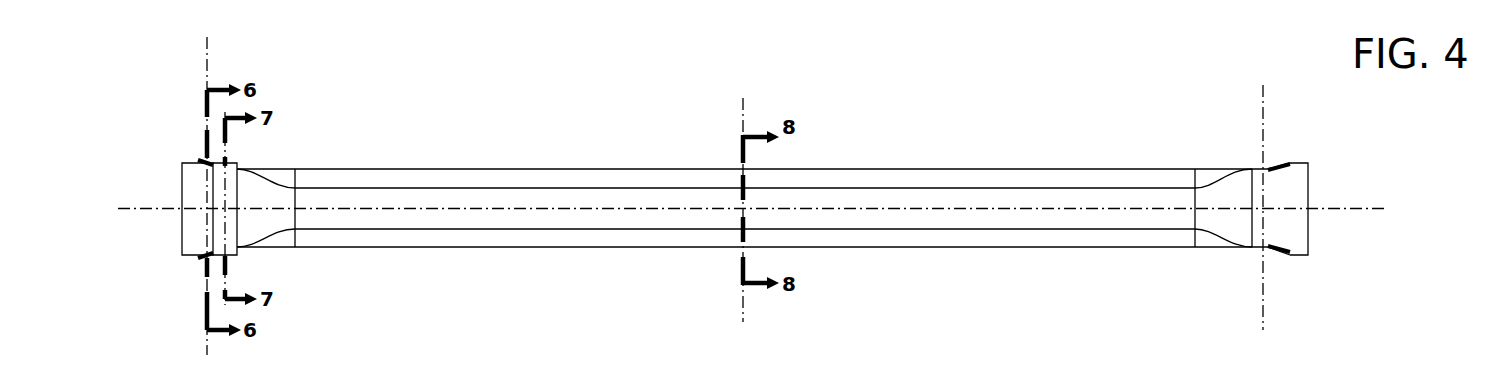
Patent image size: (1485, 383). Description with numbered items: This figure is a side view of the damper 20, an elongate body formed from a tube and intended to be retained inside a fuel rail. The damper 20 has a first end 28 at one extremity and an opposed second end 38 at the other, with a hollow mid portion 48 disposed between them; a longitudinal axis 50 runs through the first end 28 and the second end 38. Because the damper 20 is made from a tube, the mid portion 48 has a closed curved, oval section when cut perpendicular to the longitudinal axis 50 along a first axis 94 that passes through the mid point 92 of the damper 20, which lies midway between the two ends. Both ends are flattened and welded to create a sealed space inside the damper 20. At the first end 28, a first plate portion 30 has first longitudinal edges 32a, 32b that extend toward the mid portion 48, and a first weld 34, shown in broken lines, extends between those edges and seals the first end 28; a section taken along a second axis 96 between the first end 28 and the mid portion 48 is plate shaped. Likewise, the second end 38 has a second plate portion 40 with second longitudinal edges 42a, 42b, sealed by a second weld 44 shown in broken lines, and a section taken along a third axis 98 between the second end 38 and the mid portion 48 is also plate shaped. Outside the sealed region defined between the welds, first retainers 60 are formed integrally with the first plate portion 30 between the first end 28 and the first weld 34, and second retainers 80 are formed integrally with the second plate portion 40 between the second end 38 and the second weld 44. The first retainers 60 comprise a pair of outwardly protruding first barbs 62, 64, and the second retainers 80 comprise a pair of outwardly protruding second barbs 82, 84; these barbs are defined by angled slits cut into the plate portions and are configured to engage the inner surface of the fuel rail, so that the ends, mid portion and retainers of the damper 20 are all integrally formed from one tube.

The damper 20 is at (470, 117).
The first end 28 is at (182, 172).
The first plate portion 30 is at (192, 197).
The first longitudinal edge 32a is at (234, 167).
The first longitudinal edge 32b is at (240, 252).
The first weld 34 is at (222, 237).
The second end 38 is at (1310, 192).
The second plate portion 40 is at (1298, 228).
The second longitudinal edge 42a is at (1292, 165).
The second longitudinal edge 42b is at (1291, 254).
The second weld 44 is at (1262, 198).
The mid portion 48 is at (684, 200).
The longitudinal axis 50 is at (964, 208).
The first retainers 60 is at (204, 158).
The first alpha barb 62 is at (176, 90).
The first beta barb 64 is at (151, 268).
The second retainers 80 is at (1276, 163).
The second alpha barb 82 is at (1323, 102).
The second beta barb 84 is at (1316, 318).
The mid point 92 is at (741, 210).
The first axis 94 is at (741, 105).
The second axis 96 is at (210, 60).
The third axis 98 is at (1260, 103).